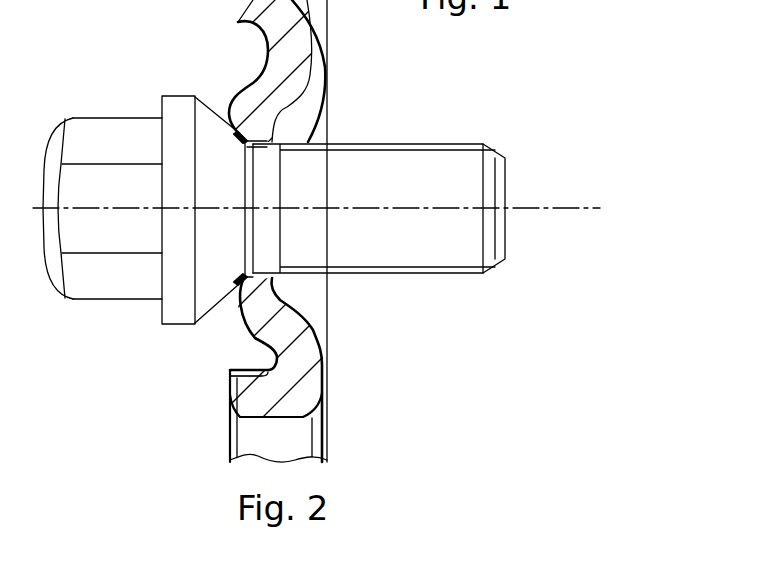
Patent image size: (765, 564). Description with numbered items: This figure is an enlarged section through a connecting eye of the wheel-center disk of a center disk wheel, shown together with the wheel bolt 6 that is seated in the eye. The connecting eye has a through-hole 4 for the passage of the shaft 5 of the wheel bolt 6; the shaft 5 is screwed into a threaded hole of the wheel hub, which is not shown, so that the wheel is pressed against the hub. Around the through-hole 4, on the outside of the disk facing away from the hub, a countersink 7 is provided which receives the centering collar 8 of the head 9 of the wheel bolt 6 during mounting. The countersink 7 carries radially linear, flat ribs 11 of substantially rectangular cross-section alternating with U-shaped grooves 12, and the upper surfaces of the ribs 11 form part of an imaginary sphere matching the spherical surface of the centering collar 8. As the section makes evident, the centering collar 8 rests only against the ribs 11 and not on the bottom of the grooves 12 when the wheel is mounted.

The through-hole 4 is at (305, 318).
The shaft 5 is at (440, 243).
The wheel bolt 6 is at (274, 206).
The countersink 7 is at (228, 303).
The centering collar 8 is at (207, 100).
The head 9 is at (127, 115).
The ribs 11 is at (238, 127).
The grooves 12 is at (236, 333).